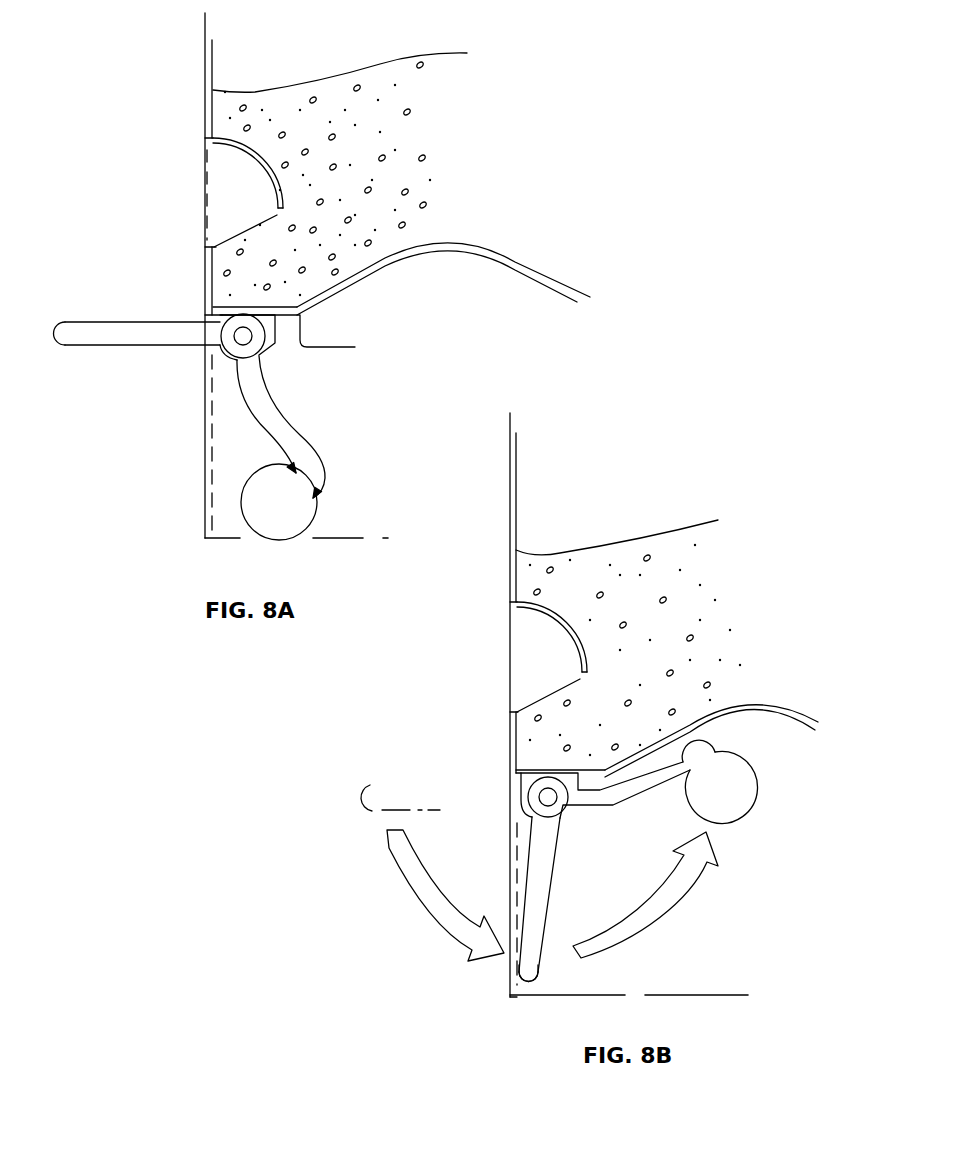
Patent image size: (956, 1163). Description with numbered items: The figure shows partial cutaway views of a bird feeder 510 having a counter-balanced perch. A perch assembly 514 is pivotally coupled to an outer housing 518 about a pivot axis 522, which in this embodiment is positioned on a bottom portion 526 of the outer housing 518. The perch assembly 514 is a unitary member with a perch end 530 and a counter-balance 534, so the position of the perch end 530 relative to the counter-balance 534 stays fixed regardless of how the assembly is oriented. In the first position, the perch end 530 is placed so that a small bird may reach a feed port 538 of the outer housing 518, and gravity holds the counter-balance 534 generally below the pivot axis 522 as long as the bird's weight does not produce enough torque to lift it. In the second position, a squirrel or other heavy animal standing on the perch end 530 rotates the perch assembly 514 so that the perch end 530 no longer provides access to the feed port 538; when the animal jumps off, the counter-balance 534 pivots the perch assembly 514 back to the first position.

In FIG. 8A, the bird feeder 510 is at (180, 150).
In FIG. 8B, the bird feeder 510 is at (452, 690).
In FIG. 8A, the perch assembly 514 is at (193, 343).
In FIG. 8B, the perch assembly 514 is at (543, 871).
In FIG. 8A, the outer housing 518 is at (212, 50).
In FIG. 8B, the outer housing 518 is at (517, 498).
In FIG. 8A, the pivot axis 522 is at (247, 338).
In FIG. 8B, the pivot axis 522 is at (552, 798).
In FIG. 8A, the bottom portion 526 is at (311, 335).
In FIG. 8A, the perch end 530 is at (73, 340).
In FIG. 8B, the perch end 530 is at (535, 974).
In FIG. 8A, the counter-balance 534 is at (308, 499).
In FIG. 8B, the counter-balance 534 is at (732, 790).
In FIG. 8A, the feed port 538 is at (240, 198).
In FIG. 8B, the feed port 538 is at (542, 644).